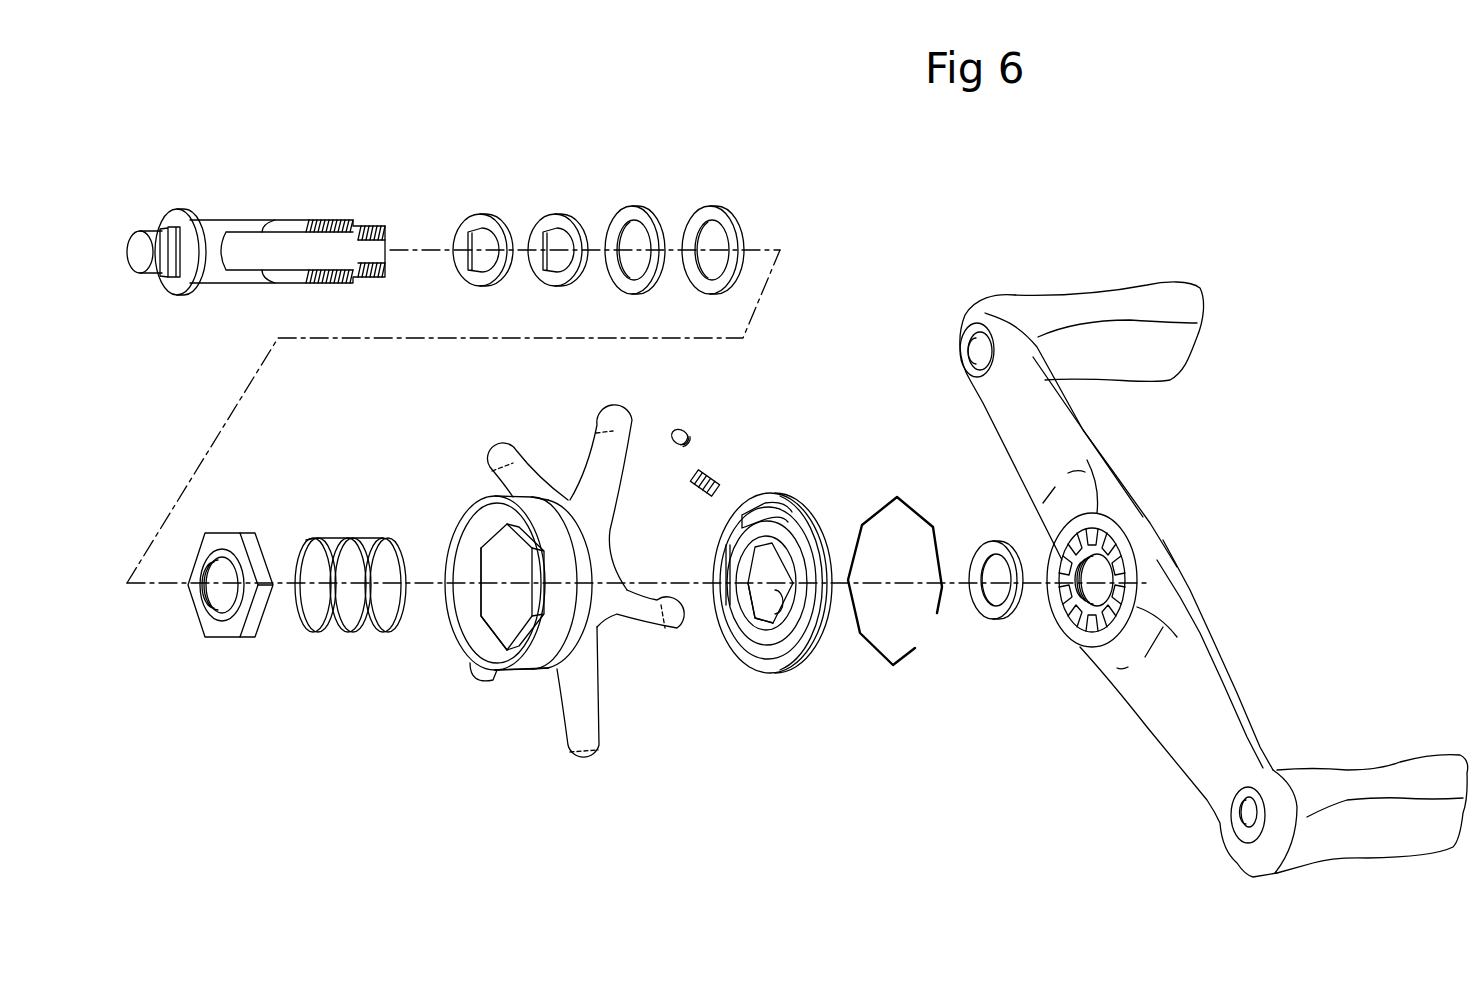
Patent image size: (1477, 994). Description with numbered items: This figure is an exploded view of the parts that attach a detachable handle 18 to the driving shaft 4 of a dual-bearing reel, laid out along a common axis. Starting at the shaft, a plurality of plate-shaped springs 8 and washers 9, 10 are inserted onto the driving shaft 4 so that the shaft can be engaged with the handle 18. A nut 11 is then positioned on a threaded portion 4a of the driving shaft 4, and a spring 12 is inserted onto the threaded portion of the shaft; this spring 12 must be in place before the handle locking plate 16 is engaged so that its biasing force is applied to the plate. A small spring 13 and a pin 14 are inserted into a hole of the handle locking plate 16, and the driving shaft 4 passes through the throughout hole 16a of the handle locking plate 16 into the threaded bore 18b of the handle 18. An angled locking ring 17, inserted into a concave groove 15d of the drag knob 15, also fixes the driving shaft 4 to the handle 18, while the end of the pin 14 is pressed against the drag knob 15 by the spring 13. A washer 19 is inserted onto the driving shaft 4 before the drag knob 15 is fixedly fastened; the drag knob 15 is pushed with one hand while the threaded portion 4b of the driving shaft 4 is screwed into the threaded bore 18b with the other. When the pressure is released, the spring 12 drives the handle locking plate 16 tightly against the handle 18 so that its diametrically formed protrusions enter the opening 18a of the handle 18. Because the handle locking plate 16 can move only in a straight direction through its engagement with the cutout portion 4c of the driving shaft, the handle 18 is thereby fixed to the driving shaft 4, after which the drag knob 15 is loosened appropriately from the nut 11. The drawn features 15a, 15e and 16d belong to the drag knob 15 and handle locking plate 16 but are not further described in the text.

The driving shaft 4 is at (222, 220).
The threaded portion 4a is at (319, 220).
The threaded portion 4b is at (369, 226).
The cutout portion 4c is at (293, 250).
The plate-shaped springs 8 is at (557, 215).
The washer 9 is at (632, 207).
The washer 10 is at (708, 207).
The nut 11 is at (218, 532).
The spring 12 is at (331, 538).
The spring 13 is at (723, 515).
The pin 14 is at (680, 428).
The drag knob 15 is at (506, 447).
The hex hole 15a is at (493, 620).
The concave groove 15d is at (508, 563).
The ring flange 15e is at (528, 668).
The handle locking plate 16 is at (773, 490).
The throughout hole 16a is at (777, 593).
The hex hole 16d is at (752, 607).
The angled locking ring 17 is at (897, 497).
The handle 18 is at (1177, 557).
The opening 18a is at (1058, 622).
The threaded bore 18b is at (1087, 557).
The washer 19 is at (993, 620).